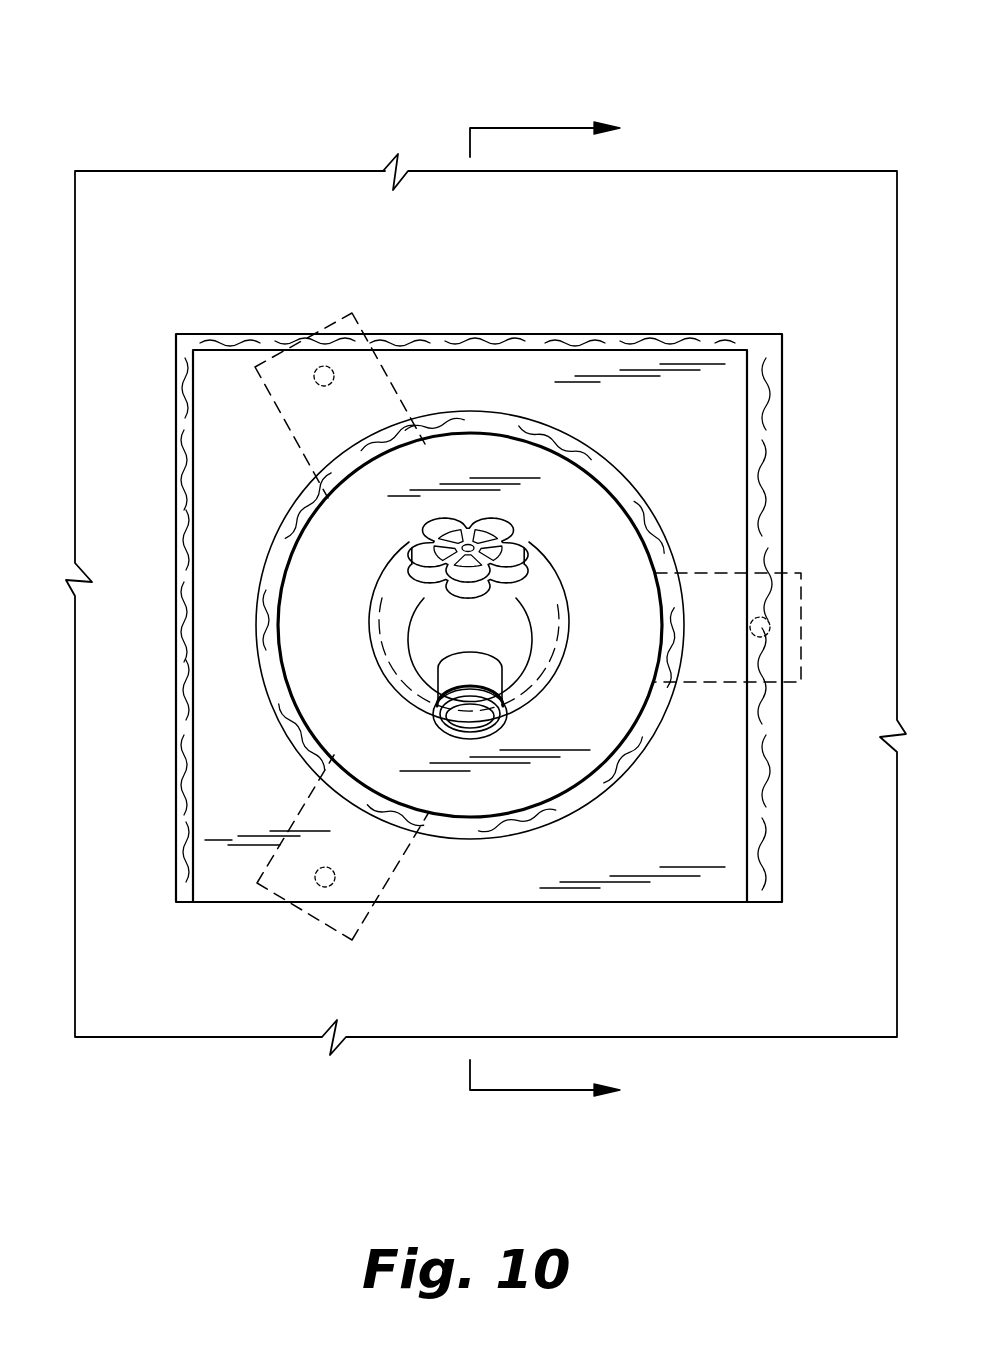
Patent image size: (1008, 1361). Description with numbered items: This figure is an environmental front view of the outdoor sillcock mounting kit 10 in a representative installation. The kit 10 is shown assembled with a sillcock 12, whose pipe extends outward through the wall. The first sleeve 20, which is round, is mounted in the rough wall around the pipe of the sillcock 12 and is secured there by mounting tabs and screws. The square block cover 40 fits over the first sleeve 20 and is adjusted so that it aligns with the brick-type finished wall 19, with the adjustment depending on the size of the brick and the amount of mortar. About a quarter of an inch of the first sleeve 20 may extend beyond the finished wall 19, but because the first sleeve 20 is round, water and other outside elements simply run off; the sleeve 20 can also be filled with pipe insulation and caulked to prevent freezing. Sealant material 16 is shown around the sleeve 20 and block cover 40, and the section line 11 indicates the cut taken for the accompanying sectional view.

The mounting kit 10 is at (122, 80).
The section line 11 is at (545, 613).
The sillcock 12 is at (378, 583).
The sealant 16 is at (178, 790).
The finished wall 19 is at (236, 287).
The first sleeve 20 is at (603, 783).
The block cover 40 is at (700, 903).